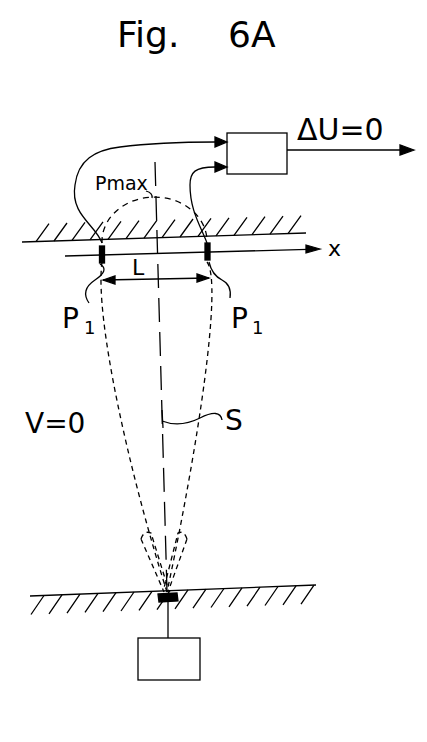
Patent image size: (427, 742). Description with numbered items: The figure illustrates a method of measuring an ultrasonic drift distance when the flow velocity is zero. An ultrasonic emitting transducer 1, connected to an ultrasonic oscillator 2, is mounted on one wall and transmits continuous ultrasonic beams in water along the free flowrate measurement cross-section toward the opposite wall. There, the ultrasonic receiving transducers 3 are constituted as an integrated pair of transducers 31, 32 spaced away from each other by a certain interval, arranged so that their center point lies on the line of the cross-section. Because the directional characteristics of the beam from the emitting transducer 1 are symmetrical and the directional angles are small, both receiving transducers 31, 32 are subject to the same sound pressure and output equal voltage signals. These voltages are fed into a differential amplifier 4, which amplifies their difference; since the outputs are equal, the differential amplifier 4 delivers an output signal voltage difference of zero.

The ultrasonic emitting transducer 1 is at (175, 598).
The ultrasonic oscillator 2 is at (169, 640).
The ultrasonic receiving transducers 3 is at (156, 219).
The ultrasonic receiving transducer 31 is at (100, 259).
The ultrasonic receiving transducer 32 is at (209, 256).
The differential amplifier 4 is at (320, 153).